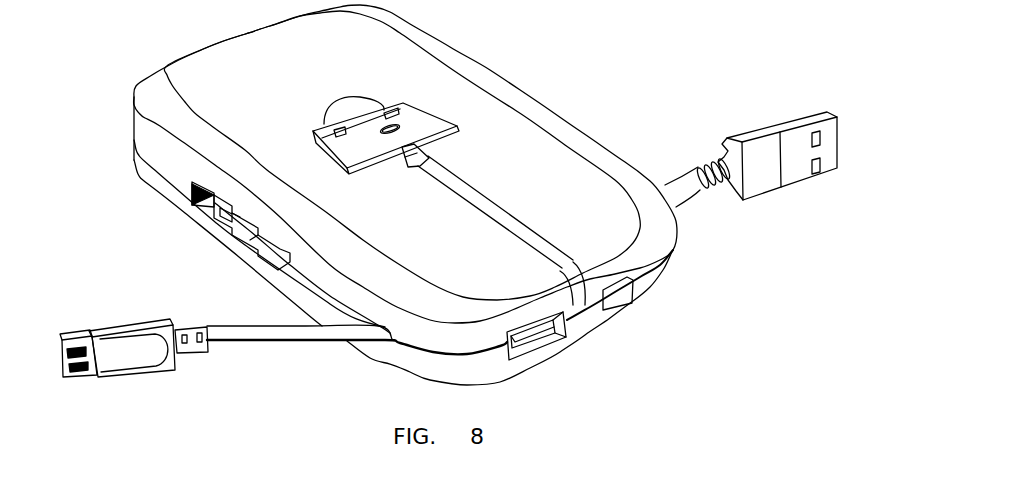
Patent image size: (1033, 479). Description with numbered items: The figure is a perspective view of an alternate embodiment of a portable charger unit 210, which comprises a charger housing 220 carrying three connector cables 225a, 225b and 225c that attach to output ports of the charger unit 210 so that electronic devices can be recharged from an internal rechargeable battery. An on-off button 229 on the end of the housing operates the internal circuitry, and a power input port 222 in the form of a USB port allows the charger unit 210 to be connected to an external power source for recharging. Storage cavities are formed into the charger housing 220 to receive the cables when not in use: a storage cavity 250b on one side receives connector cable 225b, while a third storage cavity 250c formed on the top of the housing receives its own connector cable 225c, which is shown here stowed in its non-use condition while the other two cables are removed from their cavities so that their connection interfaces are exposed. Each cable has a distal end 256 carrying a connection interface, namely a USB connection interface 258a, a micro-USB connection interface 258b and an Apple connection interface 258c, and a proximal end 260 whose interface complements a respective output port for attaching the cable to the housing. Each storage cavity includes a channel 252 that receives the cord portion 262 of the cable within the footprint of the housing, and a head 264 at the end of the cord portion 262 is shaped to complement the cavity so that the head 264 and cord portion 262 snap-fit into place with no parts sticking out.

The charger unit 210 is at (583, 94).
The charger housing 220 is at (158, 92).
The power input port 222 is at (567, 351).
The connector cable 225a is at (760, 123).
The connector cable 225b is at (134, 354).
The connector cable 225c is at (444, 158).
The on-off button 229 is at (620, 293).
The storage cavity 250b is at (175, 232).
The storage cavity 250c is at (455, 225).
The channel 252 is at (308, 290).
The distal end 256 is at (370, 88).
The USB connection interface 258a is at (792, 98).
The micro-USB connection interface 258b is at (83, 385).
The Apple connection interface 258c is at (455, 225).
The proximal end 260 is at (535, 272).
The cord portion 262 is at (498, 208).
The head 264 is at (424, 116).